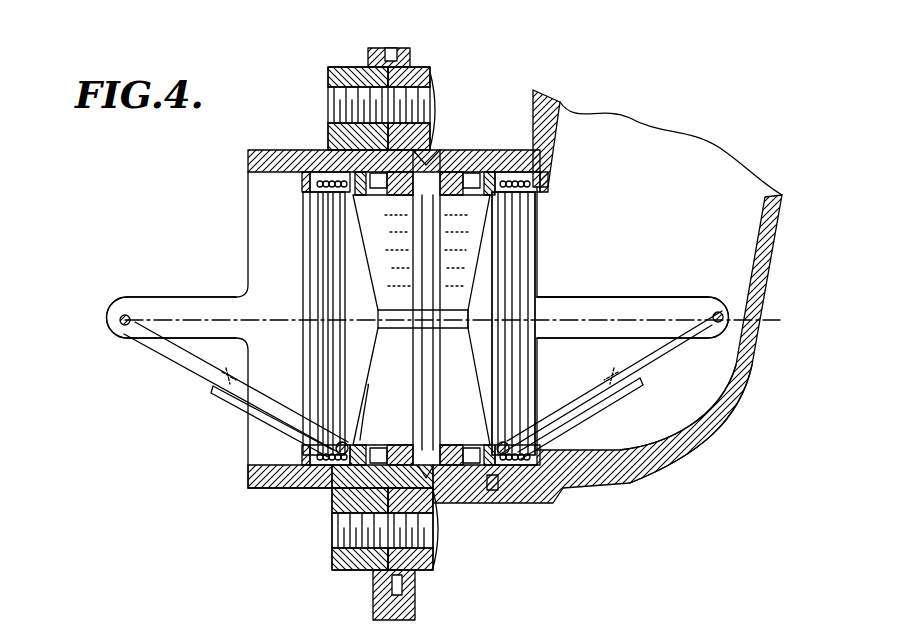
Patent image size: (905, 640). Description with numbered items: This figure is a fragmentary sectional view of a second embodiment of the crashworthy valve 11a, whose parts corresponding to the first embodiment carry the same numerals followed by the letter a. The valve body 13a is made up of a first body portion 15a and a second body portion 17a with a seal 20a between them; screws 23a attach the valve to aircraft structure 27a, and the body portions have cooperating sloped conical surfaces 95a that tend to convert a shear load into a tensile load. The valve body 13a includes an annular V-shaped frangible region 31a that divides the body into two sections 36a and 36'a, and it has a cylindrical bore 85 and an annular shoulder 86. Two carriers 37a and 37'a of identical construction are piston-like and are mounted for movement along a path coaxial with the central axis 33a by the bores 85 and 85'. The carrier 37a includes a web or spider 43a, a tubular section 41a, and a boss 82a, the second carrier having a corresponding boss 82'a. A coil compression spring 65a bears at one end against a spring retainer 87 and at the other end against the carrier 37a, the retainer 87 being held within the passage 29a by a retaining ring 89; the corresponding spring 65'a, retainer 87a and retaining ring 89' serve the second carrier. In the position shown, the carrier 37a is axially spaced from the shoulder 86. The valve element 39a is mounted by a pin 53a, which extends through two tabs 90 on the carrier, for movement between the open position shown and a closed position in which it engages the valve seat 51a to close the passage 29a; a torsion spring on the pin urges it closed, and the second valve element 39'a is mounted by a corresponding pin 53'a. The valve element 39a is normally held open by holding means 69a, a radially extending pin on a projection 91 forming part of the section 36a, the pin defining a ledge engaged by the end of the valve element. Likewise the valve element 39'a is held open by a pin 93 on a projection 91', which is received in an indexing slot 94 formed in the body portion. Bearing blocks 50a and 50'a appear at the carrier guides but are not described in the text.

The crashworthy valve 11a is at (680, 135).
The valve body 13a is at (270, 490).
The first body portion 15a is at (290, 495).
The second body portion 17a is at (690, 445).
The seal 20a is at (490, 503).
The screw 23a is at (330, 107).
The aircraft structure 27a is at (373, 605).
The passage 29a is at (270, 238).
The annular V-shaped frangible region 31a is at (440, 160).
The central axis 33a is at (212, 320).
The section 36a is at (248, 476).
The section 36'a is at (678, 440).
The carrier 37a is at (355, 270).
The carrier 37'a is at (538, 323).
The valve element 39a is at (178, 368).
The valve element 39'a is at (646, 383).
The tubular section 41a is at (370, 200).
The web or spider 43a is at (380, 357).
The upper bearing block 50a is at (360, 175).
The upper right bearing block 50'a is at (515, 202).
The valve seat 51a is at (358, 440).
The pin 53a is at (325, 472).
The pin 53'a is at (517, 505).
The spring 65a is at (300, 398).
The spring 65'a is at (567, 356).
The holding means 69a is at (118, 320).
The boss 82a is at (380, 312).
The boss 82'a is at (524, 337).
The cylindrical bore 85 is at (374, 430).
The cylindrical bore 85' is at (488, 427).
The annular shoulder 86 is at (400, 200).
The spring retainer 87 is at (302, 185).
The upper right retainer 87a is at (513, 175).
The retaining ring 89 is at (275, 453).
The retaining ring 89' is at (549, 189).
The tab 90 is at (330, 500).
The projection 91 is at (172, 295).
The projection 91' is at (635, 297).
The pin 93 is at (725, 317).
The indexing slot 94 is at (645, 300).
The sloped conical surface 95a is at (440, 520).